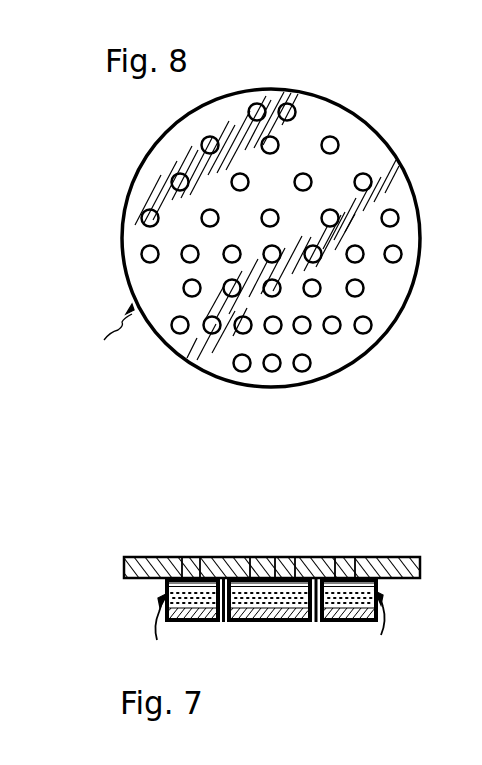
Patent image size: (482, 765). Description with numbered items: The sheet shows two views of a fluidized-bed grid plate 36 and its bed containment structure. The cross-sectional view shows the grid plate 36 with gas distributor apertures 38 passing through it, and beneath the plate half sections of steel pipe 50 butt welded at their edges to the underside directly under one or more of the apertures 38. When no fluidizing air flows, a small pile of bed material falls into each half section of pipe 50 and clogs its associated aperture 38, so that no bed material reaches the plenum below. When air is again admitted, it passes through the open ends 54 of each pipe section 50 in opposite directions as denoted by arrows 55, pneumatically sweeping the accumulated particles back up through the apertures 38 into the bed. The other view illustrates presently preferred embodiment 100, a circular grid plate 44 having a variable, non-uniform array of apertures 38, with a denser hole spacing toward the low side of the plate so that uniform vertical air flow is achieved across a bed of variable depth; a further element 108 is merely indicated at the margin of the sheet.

In FIG. 8, the grid plate 36 is at (352, 111).
In FIG. 7, the grid plate 36 is at (421, 566).
In FIG. 8, the gas distributor apertures 38 is at (203, 142).
In FIG. 7, the gas distributor apertures 38 is at (200, 557).
In FIG. 8, the grid plate 44 is at (378, 150).
In FIG. 7, the grid plate 44 is at (399, 557).
In FIG. 8, the presently preferred embodiment 100 is at (102, 326).
In FIG. 7, the half section of steel pipe 50 is at (186, 622).
In FIG. 7, the open ends 54 is at (226, 580).
In FIG. 7, the arrows 55 is at (153, 637).
In FIG. 7, the adjacent element 108 is at (481, 745).